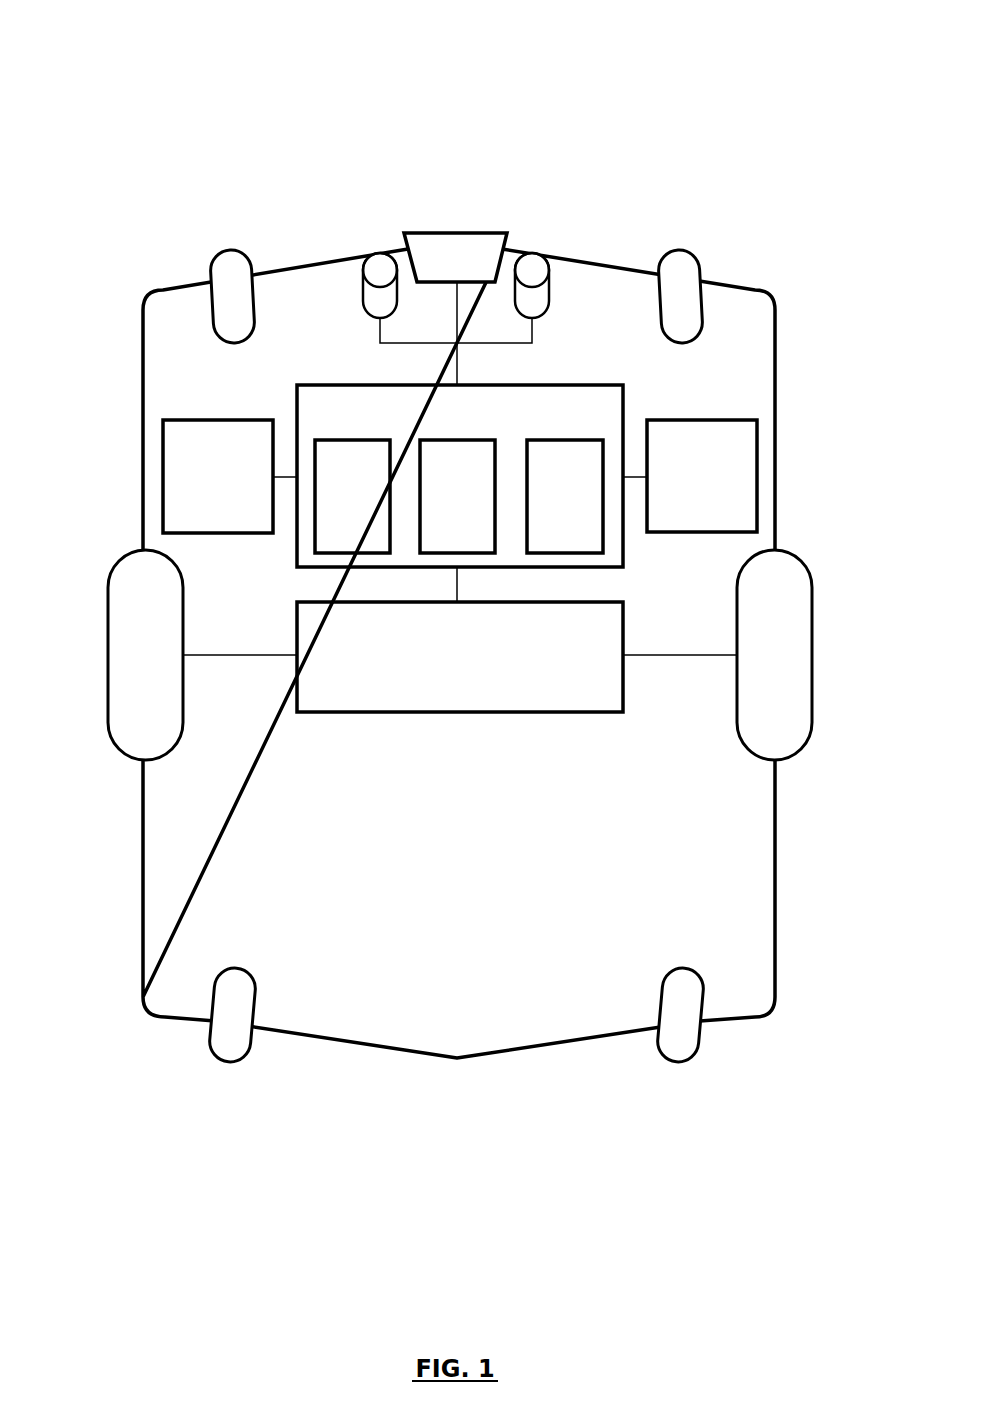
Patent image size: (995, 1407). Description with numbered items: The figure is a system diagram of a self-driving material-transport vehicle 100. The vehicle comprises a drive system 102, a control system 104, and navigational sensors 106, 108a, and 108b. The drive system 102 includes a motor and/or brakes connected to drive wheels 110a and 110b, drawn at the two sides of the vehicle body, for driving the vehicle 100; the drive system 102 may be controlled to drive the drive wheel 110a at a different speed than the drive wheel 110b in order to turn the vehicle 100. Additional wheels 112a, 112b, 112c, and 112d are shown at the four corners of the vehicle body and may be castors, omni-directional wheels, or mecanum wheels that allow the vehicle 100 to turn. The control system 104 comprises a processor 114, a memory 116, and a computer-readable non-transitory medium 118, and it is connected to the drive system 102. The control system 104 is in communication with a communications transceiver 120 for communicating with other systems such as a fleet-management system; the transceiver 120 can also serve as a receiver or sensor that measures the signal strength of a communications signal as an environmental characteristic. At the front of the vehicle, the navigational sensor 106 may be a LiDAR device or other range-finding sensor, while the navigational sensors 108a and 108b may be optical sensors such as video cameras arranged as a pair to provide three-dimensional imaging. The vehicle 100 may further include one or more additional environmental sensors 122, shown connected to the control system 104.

The self-driving material-transport vehicle 100 is at (478, 34).
The drive system 102 is at (483, 663).
The control system 104 is at (435, 425).
The navigational sensor 106 is at (436, 266).
The navigational sensor 108a is at (363, 284).
The navigational sensor 108b is at (549, 284).
The drive wheel 110a is at (108, 655).
The drive wheel 110b is at (813, 655).
The additional wheel 112a is at (213, 272).
The additional wheel 112b is at (702, 272).
The additional wheel 112c is at (213, 1035).
The additional wheel 112d is at (700, 1038).
The processor 114 is at (375, 501).
The memory 116 is at (481, 501).
The computer-readable non-transitory medium 118 is at (588, 501).
The communications transceiver 120 is at (241, 489).
The environmental sensor 122 is at (725, 489).